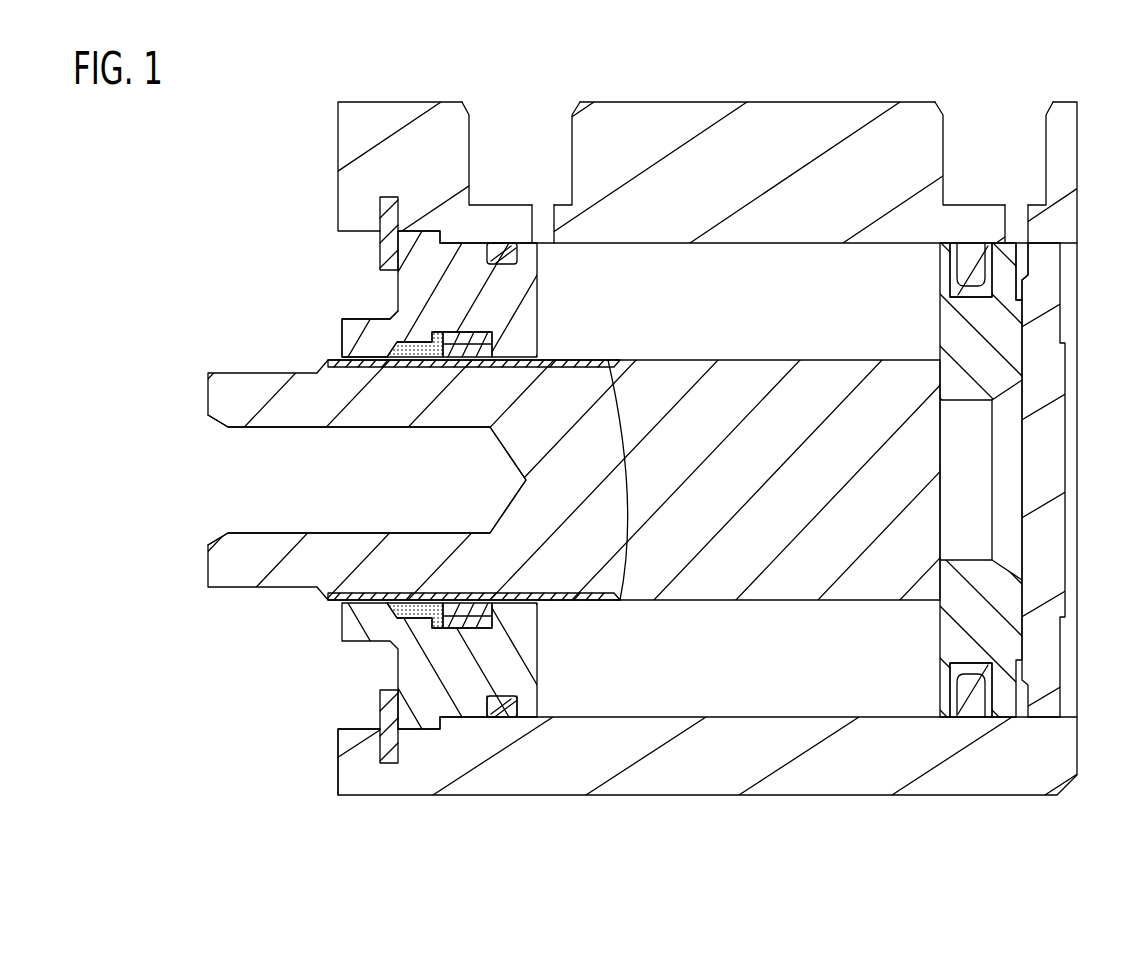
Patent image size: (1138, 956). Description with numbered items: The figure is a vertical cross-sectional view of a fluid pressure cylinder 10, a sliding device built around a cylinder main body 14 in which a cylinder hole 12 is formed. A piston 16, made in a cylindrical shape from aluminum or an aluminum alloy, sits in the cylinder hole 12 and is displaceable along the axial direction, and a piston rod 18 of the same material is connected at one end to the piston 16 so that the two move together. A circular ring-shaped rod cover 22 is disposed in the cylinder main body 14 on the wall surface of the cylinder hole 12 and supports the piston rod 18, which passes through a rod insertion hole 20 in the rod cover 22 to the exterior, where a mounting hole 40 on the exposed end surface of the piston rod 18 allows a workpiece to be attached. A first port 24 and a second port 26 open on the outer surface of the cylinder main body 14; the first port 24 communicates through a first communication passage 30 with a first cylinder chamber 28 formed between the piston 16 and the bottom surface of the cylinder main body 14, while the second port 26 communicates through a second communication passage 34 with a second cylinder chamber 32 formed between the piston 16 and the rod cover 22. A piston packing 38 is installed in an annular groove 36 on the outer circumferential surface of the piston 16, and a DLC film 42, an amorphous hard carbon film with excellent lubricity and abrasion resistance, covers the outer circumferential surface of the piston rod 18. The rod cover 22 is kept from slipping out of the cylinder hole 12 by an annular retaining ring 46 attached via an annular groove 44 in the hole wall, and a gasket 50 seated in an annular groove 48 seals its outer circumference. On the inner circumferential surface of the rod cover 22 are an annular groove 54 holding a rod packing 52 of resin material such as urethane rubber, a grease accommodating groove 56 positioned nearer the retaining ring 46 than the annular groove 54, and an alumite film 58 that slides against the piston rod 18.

The fluid pressure cylinder 10 is at (214, 174).
The cylinder hole 12 is at (350, 730).
The cylinder main body 14 is at (427, 773).
The piston 16 is at (1002, 650).
The piston rod 18 is at (612, 536).
The rod insertion hole 20 is at (510, 358).
The rod cover 22 is at (353, 630).
The first port 24 is at (990, 128).
The second port 26 is at (515, 128).
The first cylinder chamber 28 is at (1022, 261).
The first communication passage 30 is at (1018, 216).
The second cylinder chamber 32 is at (668, 270).
The second communication passage 34 is at (545, 236).
The annular groove 36 is at (950, 687).
The piston packing 38 is at (967, 718).
The mounting hole 40 is at (248, 486).
The DLC film 42 is at (601, 600).
The annular groove 44 is at (392, 754).
The retaining ring 46 is at (382, 691).
The annular groove 48 is at (505, 716).
The gasket 50 is at (505, 720).
The rod packing 52 is at (465, 605).
The annular groove 54 is at (465, 363).
The grease accommodating groove 56 is at (396, 336).
The alumite film 58 is at (370, 603).